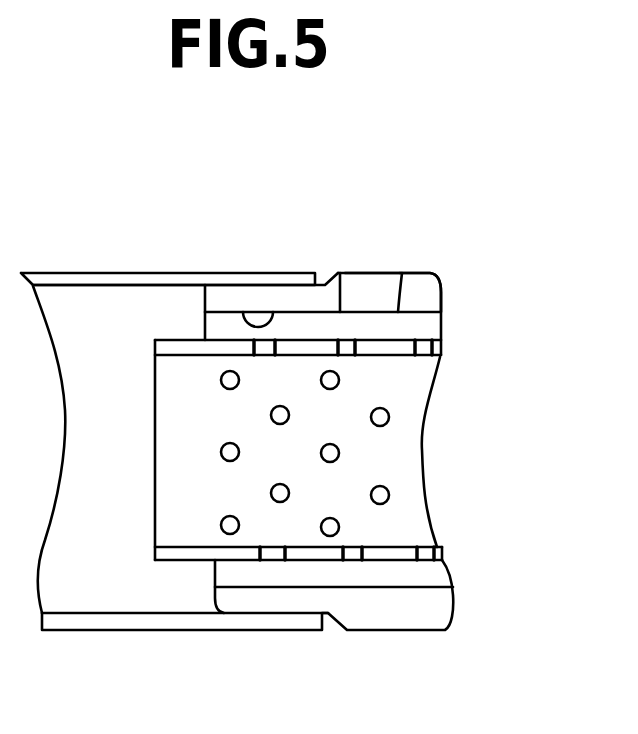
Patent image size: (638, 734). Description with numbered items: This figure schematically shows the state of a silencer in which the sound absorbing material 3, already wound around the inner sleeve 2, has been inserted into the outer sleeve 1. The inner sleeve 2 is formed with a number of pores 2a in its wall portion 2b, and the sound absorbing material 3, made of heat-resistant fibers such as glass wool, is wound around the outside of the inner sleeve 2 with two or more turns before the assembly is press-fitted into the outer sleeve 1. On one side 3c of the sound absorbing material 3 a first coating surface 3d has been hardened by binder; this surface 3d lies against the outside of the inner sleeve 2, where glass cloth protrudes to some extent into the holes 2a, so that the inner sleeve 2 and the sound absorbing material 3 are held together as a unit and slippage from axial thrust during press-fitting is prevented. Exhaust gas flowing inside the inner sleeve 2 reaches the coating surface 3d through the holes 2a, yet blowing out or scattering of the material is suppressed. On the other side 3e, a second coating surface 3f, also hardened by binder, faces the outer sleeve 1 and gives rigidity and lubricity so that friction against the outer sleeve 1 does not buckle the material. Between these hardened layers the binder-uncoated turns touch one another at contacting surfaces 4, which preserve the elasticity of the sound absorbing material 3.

The outer sleeve 1 is at (122, 273).
The inner sleeve 2 is at (190, 357).
The pores 2a is at (221, 452).
The wall portion 2b is at (393, 470).
The sound absorbing material 3 is at (433, 322).
The one side of sound absorbing material 3c is at (237, 310).
The first coating surface 3d is at (357, 330).
The other side of sound absorbing material 3e is at (340, 273).
The second coating surface 3f is at (367, 273).
The contacting surfaces 4 is at (402, 273).